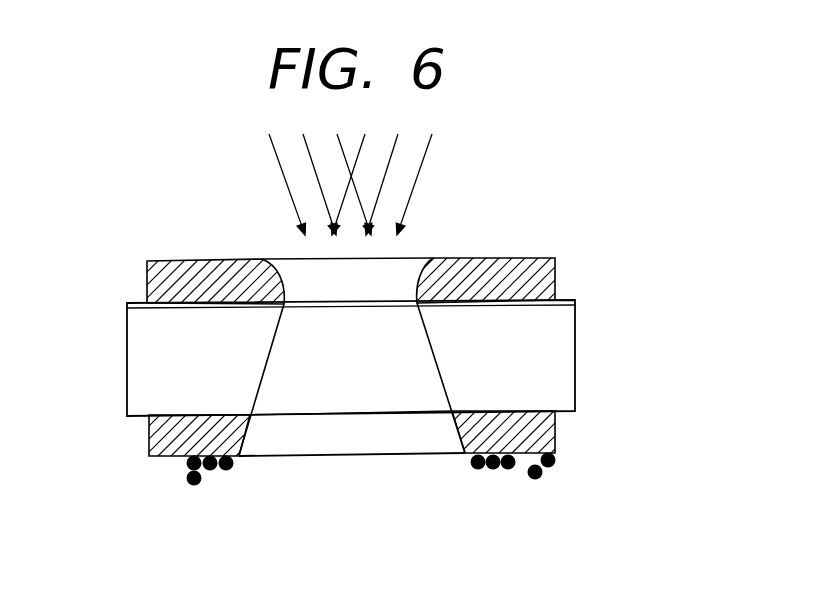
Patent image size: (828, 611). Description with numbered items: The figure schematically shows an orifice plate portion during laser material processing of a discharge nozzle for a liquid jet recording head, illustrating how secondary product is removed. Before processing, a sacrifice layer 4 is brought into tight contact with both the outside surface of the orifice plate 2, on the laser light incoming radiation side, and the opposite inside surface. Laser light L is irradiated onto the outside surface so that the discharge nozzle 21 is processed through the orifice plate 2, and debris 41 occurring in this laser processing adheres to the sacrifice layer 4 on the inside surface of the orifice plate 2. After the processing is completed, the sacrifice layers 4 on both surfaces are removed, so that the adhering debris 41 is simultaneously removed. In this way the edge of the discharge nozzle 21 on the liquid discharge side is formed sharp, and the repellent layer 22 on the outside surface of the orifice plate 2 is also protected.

The orifice plate 2 is at (563, 353).
The sacrifice layer 4 is at (525, 267).
The discharge nozzle 21 is at (349, 405).
The repellent layer 22 is at (577, 302).
The debris 41 is at (185, 465).
The laser light L is at (423, 160).